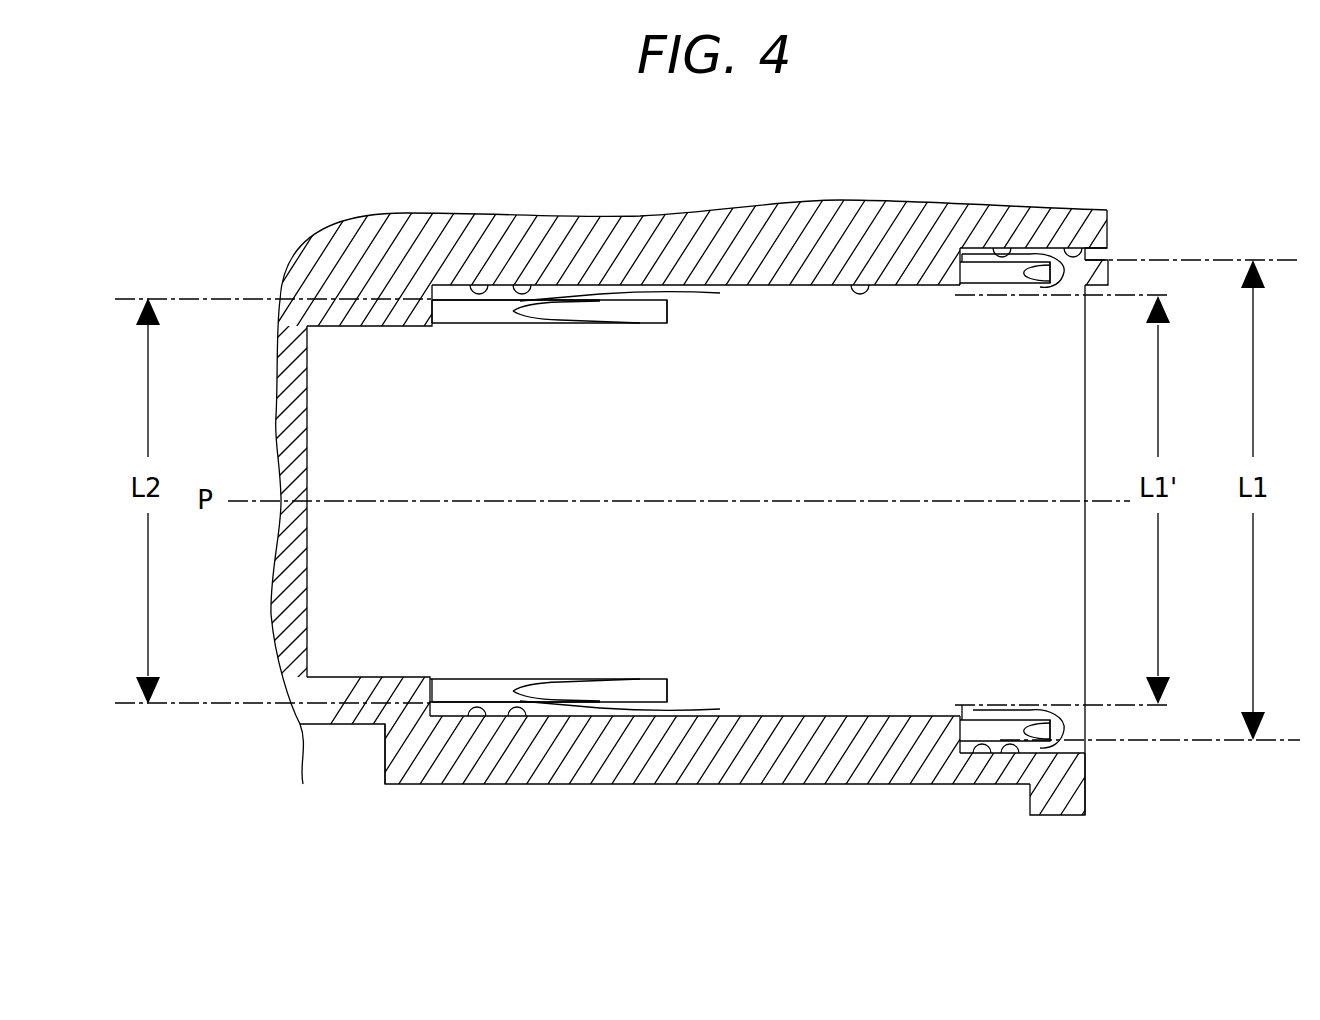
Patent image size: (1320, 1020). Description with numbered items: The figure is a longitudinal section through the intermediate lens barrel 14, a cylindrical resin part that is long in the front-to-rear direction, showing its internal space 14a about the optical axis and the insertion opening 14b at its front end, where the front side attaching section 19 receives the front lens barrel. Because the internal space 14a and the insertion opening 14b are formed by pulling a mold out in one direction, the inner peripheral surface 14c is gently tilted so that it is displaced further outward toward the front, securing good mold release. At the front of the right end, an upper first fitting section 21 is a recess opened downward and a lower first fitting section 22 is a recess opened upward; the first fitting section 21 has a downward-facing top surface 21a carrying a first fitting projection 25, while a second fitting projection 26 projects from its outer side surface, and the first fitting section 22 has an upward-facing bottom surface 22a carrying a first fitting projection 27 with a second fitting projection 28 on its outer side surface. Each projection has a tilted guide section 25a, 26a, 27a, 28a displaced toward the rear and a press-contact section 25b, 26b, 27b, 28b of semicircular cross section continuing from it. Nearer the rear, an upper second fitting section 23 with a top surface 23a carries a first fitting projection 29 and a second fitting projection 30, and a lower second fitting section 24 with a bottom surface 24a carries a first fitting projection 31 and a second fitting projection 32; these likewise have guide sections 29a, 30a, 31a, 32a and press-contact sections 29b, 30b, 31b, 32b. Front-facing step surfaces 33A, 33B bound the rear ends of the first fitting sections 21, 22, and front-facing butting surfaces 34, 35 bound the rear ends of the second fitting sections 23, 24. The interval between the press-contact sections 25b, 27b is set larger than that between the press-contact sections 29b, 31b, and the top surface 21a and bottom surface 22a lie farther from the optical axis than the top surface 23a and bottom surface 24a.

The intermediate lens barrel 14 is at (777, 211).
The internal space 14a is at (741, 452).
The insertion opening 14b is at (1107, 249).
The inner peripheral surface 14c is at (862, 290).
The front side attaching section 19 is at (1057, 815).
The first fitting section 21 is at (1074, 247).
The top surface 21a is at (1010, 247).
The first fitting section 22 is at (982, 757).
The bottom surface 22a is at (1012, 756).
The second fitting section 23 is at (482, 292).
The top surface 23a is at (523, 292).
The second fitting section 24 is at (472, 722).
The bottom surface 24a is at (518, 722).
The first fitting projection 25 is at (978, 290).
The guide section 25a is at (1052, 270).
The press-contact section 25b is at (1000, 283).
The second fitting projection 26 is at (985, 280).
The guide section 26a is at (1043, 283).
The press-contact section 26b is at (1010, 280).
The first fitting projection 27 is at (972, 721).
The guide section 27a is at (1065, 749).
The press-contact section 27b is at (990, 709).
The second fitting projection 28 is at (1020, 709).
The guide section 28a is at (1053, 729).
The press-contact section 28b is at (967, 707).
The first fitting projection 29 is at (447, 300).
The guide section 29a is at (650, 294).
The press-contact section 29b is at (468, 303).
The second fitting projection 30 is at (507, 318).
The guide section 30a is at (632, 318).
The press-contact section 30b is at (482, 318).
The first fitting projection 31 is at (440, 690).
The guide section 31a is at (690, 700).
The press-contact section 31b is at (453, 707).
The second fitting projection 32 is at (480, 682).
The guide section 32a is at (595, 688).
The press-contact section 32b is at (497, 682).
The step surface 33A is at (973, 250).
The step surface 33B is at (912, 786).
The butting surface 34 is at (447, 286).
The butting surface 35 is at (408, 787).